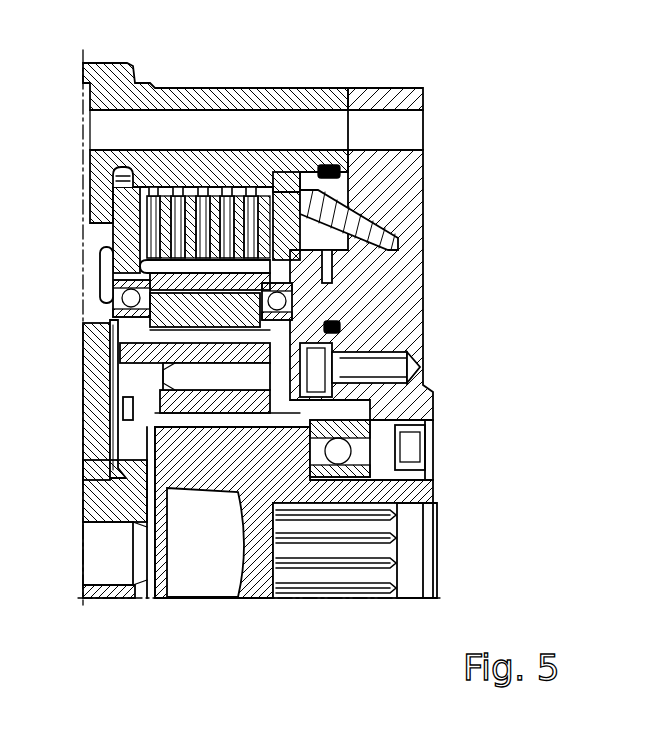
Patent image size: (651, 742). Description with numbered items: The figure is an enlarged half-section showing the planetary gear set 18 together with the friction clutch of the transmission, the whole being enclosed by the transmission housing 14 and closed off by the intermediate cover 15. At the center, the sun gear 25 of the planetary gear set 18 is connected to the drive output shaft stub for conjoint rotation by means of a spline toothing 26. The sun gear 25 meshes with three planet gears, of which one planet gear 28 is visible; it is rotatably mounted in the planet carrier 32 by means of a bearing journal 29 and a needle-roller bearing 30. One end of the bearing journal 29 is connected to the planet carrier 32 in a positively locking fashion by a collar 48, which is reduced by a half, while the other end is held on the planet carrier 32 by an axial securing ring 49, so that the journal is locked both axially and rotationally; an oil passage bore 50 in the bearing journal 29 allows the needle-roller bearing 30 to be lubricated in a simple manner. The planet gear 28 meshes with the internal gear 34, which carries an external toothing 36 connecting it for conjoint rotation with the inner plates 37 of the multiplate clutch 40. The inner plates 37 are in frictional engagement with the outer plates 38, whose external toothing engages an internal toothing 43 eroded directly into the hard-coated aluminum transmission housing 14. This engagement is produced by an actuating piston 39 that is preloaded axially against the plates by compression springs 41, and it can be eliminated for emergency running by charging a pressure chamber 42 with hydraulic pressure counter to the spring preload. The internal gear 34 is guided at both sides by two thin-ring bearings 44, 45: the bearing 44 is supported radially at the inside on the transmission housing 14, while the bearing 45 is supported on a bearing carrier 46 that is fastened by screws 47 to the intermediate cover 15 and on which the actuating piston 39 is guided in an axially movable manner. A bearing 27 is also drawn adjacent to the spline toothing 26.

The transmission housing 14 is at (298, 90).
The intermediate cover 15 is at (412, 208).
The planetary gear set 18 is at (246, 610).
The sun gear 25 is at (193, 483).
The spline toothing 26 is at (380, 542).
The bearing 27 is at (375, 432).
The planet gear 28 is at (128, 302).
The bearing journal 29 is at (112, 396).
The needle-roller bearing 30 is at (165, 352).
The planet carrier 32 is at (92, 506).
The internal gear 34 is at (140, 268).
The external toothing 36 is at (113, 222).
The inner plates 37 is at (222, 195).
The outer plates 38 is at (187, 200).
The actuating piston 39 is at (400, 262).
The multiplate clutch 40 is at (238, 165).
The compression springs 41 is at (405, 192).
The pressure chamber 42 is at (370, 258).
The internal toothing 43 is at (152, 195).
The bearing 44 is at (104, 286).
The bearing 45 is at (300, 308).
The bearing carrier 46 is at (416, 350).
The screws 47 is at (388, 370).
The collar 48 is at (345, 330).
The axial securing ring 49 is at (125, 416).
The oil passage bore 50 is at (170, 386).